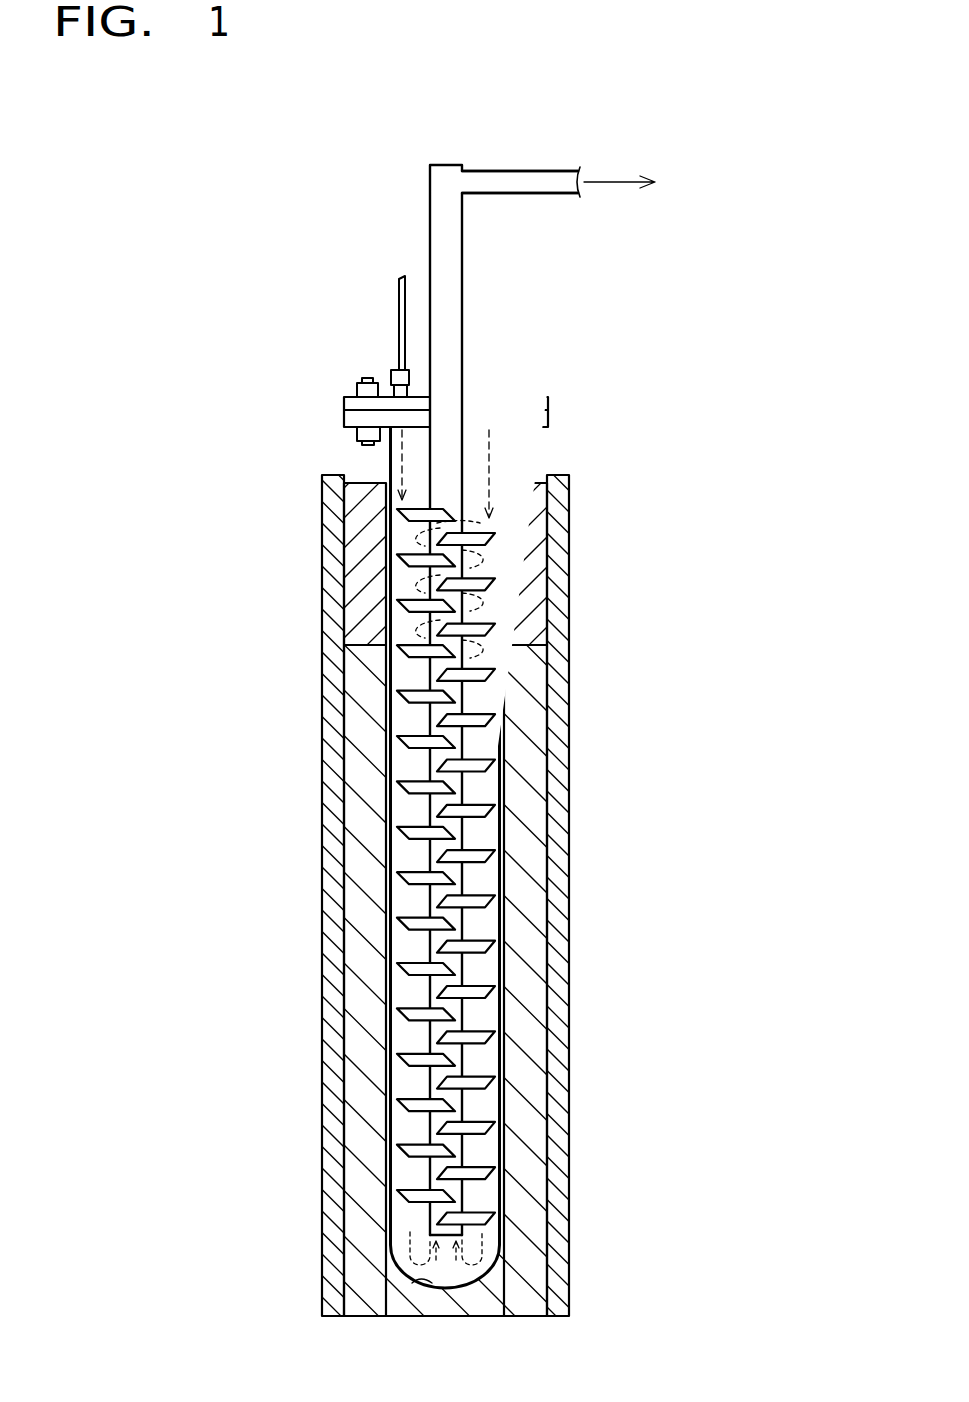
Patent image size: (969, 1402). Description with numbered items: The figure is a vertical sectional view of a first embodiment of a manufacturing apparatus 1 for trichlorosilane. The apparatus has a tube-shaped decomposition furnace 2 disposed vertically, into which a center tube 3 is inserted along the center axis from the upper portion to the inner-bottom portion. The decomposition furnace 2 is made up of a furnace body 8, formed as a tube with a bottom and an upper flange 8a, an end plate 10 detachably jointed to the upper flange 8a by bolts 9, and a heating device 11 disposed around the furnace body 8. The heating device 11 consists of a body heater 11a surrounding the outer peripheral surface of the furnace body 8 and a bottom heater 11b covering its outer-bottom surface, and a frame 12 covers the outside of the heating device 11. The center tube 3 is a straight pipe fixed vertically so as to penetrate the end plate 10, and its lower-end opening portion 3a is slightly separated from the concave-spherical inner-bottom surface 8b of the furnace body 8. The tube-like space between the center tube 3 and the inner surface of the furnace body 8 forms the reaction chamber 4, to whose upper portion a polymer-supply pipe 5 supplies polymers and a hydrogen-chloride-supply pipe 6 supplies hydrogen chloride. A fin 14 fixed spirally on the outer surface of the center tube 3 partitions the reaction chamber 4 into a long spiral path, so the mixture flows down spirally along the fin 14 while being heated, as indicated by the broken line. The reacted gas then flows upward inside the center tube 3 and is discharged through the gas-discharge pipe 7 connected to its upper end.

The manufacturing apparatus 1 is at (688, 349).
The decomposition furnace 2 is at (594, 549).
The center tube 3 is at (462, 478).
The lower-end opening portion 3a is at (448, 1236).
The reaction chamber 4 is at (490, 872).
The polymer-supply pipe 5 is at (397, 307).
The hydrogen-chloride-supply pipe 6 is at (492, 282).
The gas-discharge pipe 7 is at (517, 172).
The furnace body 8 is at (502, 740).
The upper flange 8a is at (347, 415).
The inner-bottom surface 8b is at (410, 1282).
The bolts 9 is at (367, 378).
The end plate 10 is at (548, 400).
The heating device 11 is at (329, 1075).
The body heater 11a is at (372, 722).
The bottom heater 11b is at (483, 1292).
The frame 12 is at (557, 982).
The fin 14 is at (403, 925).